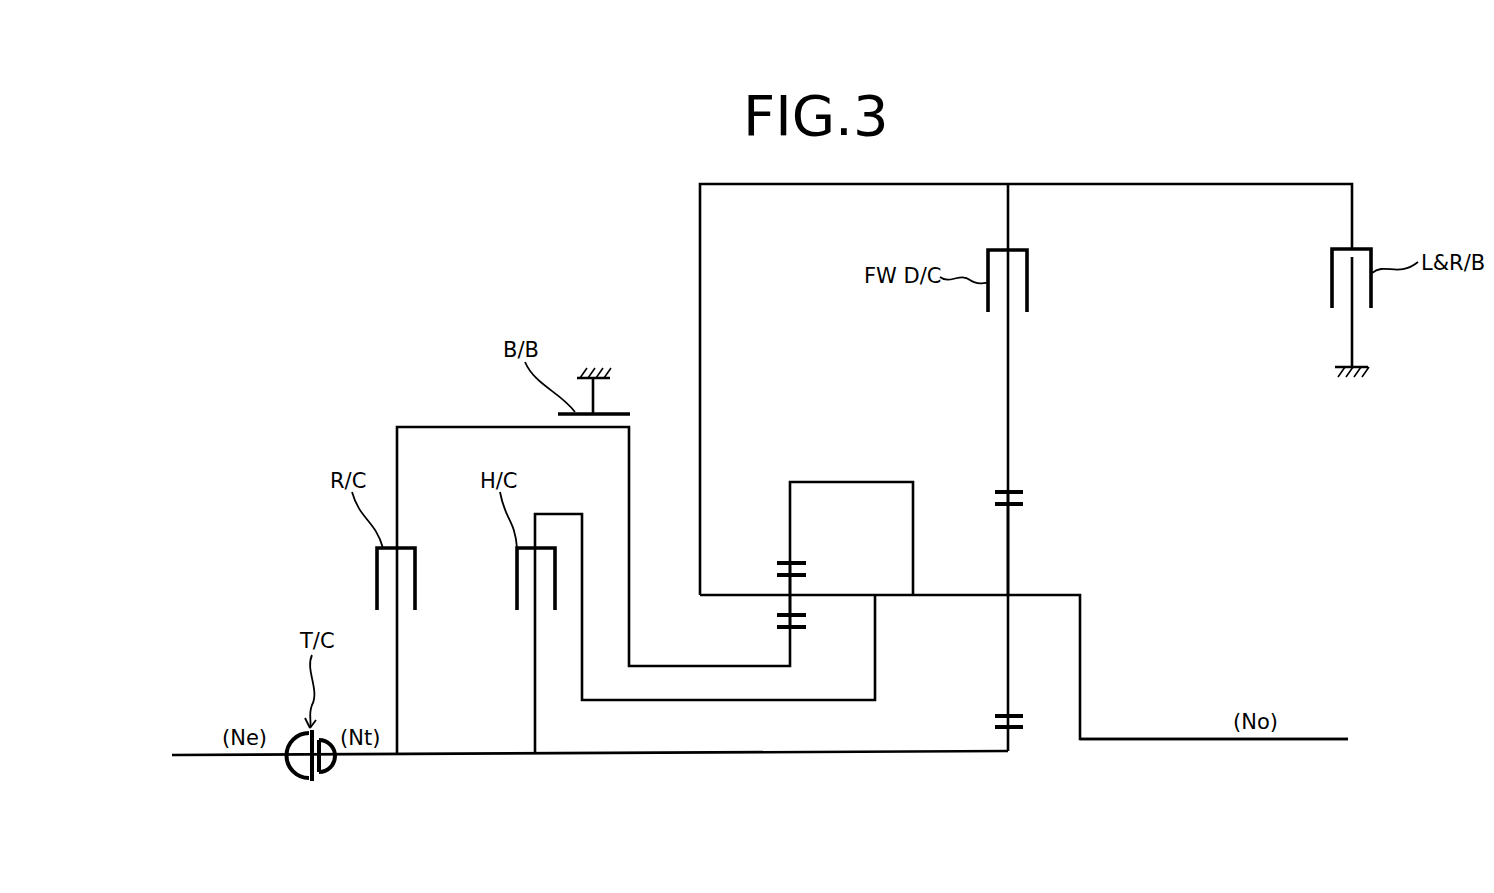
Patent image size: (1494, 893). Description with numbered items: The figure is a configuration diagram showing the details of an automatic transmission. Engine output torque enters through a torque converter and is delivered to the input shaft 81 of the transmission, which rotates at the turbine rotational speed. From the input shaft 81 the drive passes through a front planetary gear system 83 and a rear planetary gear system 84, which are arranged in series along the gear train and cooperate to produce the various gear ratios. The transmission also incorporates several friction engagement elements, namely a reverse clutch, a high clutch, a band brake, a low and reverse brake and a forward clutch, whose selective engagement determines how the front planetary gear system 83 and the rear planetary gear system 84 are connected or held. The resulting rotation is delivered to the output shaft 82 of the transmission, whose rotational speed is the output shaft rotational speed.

The input shaft 81 is at (362, 757).
The output shaft 82 is at (1255, 742).
The front planetary gear system 83 is at (782, 558).
The rear planetary gear system 84 is at (1013, 588).